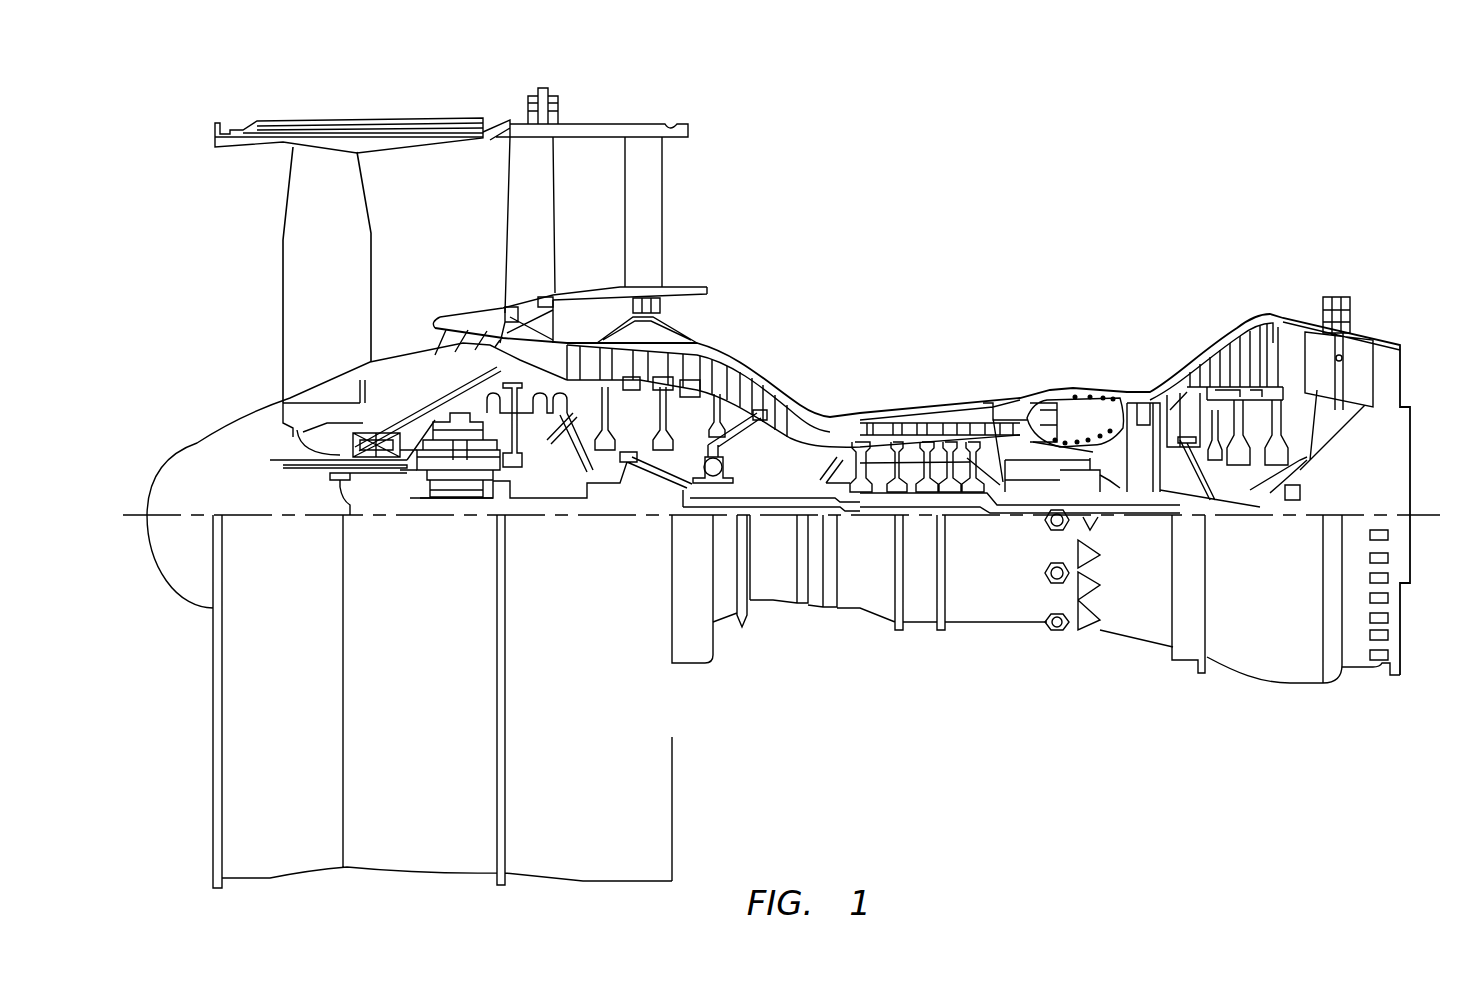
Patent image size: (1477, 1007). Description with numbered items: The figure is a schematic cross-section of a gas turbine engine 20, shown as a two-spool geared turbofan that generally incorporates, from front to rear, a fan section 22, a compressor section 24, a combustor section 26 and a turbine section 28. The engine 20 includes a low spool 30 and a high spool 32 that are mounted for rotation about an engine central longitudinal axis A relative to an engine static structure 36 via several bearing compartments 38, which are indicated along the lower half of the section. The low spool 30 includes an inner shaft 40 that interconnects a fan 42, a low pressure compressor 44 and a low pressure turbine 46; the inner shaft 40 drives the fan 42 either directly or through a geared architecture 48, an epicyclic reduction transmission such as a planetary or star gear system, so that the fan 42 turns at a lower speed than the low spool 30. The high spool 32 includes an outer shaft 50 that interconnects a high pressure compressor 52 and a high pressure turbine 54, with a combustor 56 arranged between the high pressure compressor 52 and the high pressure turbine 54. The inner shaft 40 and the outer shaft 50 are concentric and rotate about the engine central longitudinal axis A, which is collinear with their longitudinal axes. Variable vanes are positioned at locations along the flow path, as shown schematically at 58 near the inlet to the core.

The gas turbine engine 20 is at (1134, 175).
The fan section 22 is at (502, 112).
The compressor section 24 is at (510, 261).
The combustor section 26 is at (1078, 261).
The turbine section 28 is at (1340, 261).
The low spool 30 is at (753, 473).
The high spool 32 is at (990, 472).
The engine static structure 36 is at (918, 638).
The bearing compartments 38 is at (535, 592).
The inner shaft 40 is at (1107, 502).
The fan 42 is at (343, 327).
The low pressure compressor 44 is at (703, 350).
The low pressure turbine 46 is at (1256, 347).
The geared architecture 48 is at (457, 475).
The outer shaft 50 is at (1120, 488).
The high pressure compressor 52 is at (913, 472).
The high pressure turbine 54 is at (1145, 410).
The combustor 56 is at (1087, 413).
The variable vanes 58 is at (575, 350).
The engine central longitudinal axis A is at (1432, 500).